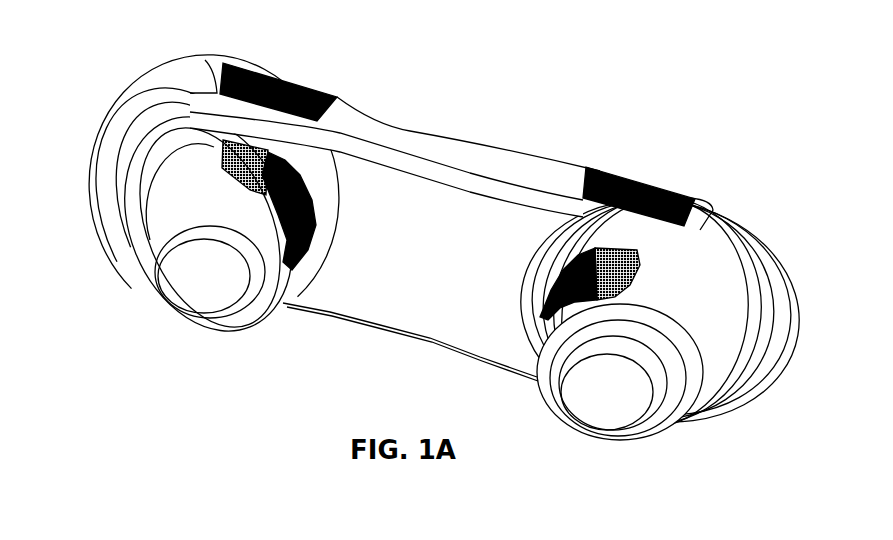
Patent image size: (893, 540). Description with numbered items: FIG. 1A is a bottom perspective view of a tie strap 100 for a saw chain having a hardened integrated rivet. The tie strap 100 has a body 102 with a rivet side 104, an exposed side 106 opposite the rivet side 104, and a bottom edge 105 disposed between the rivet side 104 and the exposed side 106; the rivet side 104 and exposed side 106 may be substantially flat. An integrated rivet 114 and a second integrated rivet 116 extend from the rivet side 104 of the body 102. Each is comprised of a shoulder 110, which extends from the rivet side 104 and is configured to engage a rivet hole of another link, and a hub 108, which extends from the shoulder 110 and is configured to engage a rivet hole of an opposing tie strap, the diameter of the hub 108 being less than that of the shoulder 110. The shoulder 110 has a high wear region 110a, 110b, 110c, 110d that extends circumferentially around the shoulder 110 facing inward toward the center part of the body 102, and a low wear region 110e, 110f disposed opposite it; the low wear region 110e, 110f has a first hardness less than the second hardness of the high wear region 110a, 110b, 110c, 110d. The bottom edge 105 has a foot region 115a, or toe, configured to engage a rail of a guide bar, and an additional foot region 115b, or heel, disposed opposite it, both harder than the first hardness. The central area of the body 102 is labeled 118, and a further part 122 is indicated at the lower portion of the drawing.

The tie strap 100 is at (600, 67).
The body 102 is at (450, 143).
The rivet side 104 is at (427, 318).
The bottom edge 105 is at (402, 130).
The exposed side 106 is at (497, 146).
The hub 108 is at (165, 247).
The shoulder 110 is at (437, 249).
The high wear region 110a is at (545, 315).
The high wear region 110b is at (632, 263).
The high wear region 110c is at (305, 195).
The high wear region 110d is at (253, 177).
The low wear region 110e is at (668, 298).
The low wear region 110f is at (177, 158).
The integrated rivet 114 is at (188, 347).
The foot region 115a is at (282, 78).
The additional foot region 115b is at (620, 175).
The second integrated rivet 116 is at (627, 472).
The central region of body 118 is at (422, 253).
The component 122 is at (318, 539).